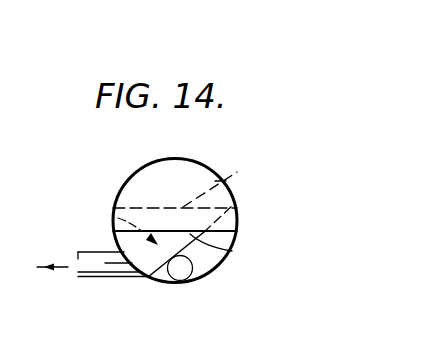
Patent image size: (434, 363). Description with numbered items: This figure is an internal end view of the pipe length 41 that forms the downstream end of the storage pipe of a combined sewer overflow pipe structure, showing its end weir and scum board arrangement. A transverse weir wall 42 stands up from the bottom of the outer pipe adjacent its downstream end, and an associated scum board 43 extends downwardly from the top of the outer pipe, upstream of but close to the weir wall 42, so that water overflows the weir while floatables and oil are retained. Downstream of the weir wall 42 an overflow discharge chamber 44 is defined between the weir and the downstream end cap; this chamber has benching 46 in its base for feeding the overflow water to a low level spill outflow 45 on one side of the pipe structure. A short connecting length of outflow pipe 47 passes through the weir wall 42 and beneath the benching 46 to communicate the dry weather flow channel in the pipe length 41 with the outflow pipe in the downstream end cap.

The pipe length 41 is at (192, 158).
The weir wall 42 is at (234, 174).
The scum board 43 is at (137, 190).
The overflow discharge chamber 44 is at (112, 216).
The low level spill outflow 45 is at (92, 283).
The benching 46 is at (232, 251).
The outflow pipe 47 is at (181, 282).